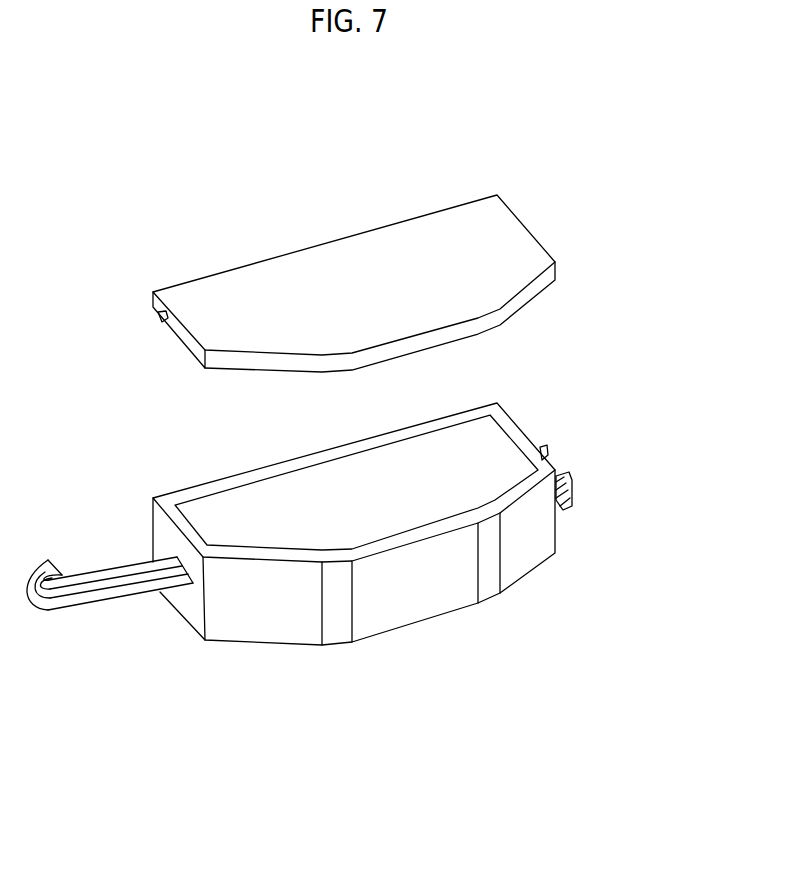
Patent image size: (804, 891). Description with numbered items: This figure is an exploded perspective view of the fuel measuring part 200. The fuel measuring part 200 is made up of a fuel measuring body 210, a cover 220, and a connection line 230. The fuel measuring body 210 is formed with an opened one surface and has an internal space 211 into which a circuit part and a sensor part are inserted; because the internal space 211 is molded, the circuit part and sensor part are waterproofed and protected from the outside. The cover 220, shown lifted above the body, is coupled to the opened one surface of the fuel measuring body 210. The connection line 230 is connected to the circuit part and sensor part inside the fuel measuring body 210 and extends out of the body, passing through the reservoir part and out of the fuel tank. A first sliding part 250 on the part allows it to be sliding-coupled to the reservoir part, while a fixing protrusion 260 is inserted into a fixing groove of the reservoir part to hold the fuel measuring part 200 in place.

The fuel measuring part 200 is at (310, 183).
The fuel measuring body 210 is at (423, 588).
The internal space 211 is at (435, 497).
The cover 220 is at (366, 285).
The connection line 230 is at (42, 617).
The first sliding part 250 is at (162, 315).
The fixing protrusion 260 is at (571, 482).